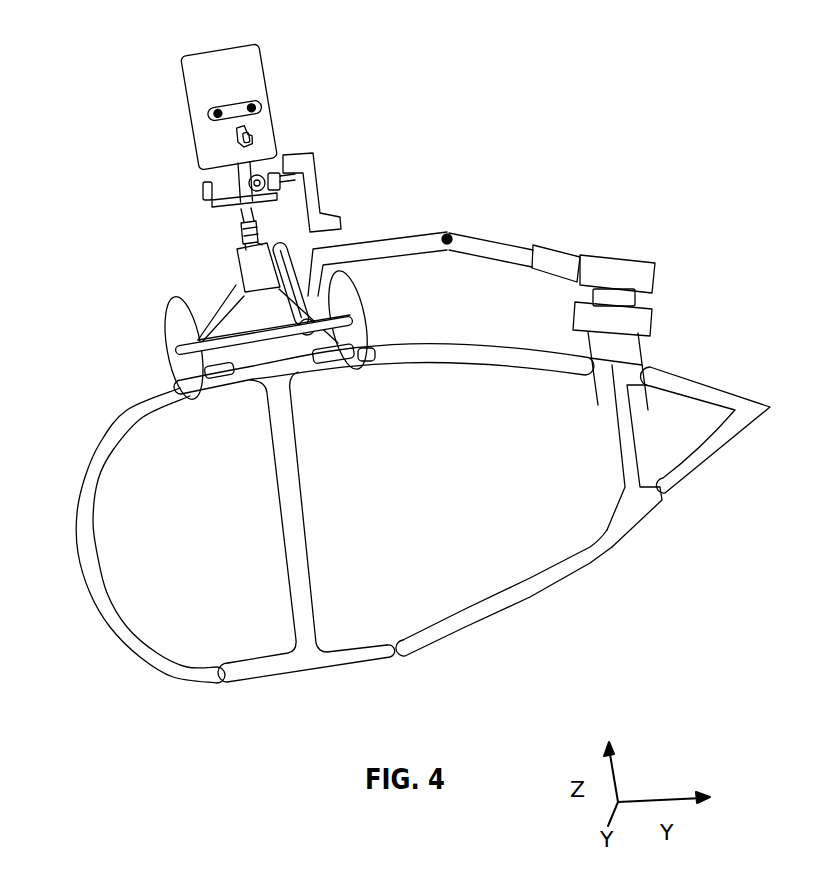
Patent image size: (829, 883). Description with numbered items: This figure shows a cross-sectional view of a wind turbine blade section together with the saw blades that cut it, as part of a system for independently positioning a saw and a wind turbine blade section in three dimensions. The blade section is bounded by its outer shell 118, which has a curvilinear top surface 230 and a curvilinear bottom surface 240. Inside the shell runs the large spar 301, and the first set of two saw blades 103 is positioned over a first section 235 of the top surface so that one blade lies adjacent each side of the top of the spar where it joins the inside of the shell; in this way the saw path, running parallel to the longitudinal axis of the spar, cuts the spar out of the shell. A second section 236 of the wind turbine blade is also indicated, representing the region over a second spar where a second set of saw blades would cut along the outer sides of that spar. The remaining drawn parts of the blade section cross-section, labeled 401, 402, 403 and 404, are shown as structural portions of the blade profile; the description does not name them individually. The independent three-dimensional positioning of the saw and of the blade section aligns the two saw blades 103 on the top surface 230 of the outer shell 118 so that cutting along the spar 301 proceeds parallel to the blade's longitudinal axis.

The first set of two saw blades 103 is at (237, 262).
The outer shell 118 is at (500, 353).
The curvilinear top surface 230 is at (432, 355).
The first section 235 is at (246, 368).
The second section 236 is at (612, 367).
The curvilinear bottom surface 240 is at (482, 627).
The large spar 301 is at (307, 533).
The curved frame end 401 is at (87, 480).
The bottom frame segment 402 is at (312, 663).
The strut 403 is at (623, 422).
The triangular frame wing 404 is at (720, 393).